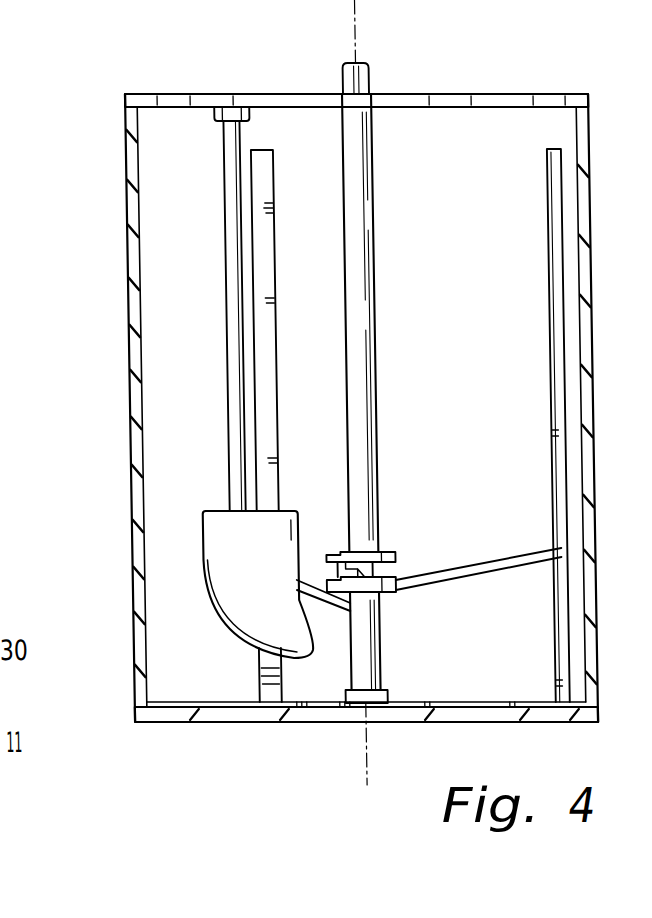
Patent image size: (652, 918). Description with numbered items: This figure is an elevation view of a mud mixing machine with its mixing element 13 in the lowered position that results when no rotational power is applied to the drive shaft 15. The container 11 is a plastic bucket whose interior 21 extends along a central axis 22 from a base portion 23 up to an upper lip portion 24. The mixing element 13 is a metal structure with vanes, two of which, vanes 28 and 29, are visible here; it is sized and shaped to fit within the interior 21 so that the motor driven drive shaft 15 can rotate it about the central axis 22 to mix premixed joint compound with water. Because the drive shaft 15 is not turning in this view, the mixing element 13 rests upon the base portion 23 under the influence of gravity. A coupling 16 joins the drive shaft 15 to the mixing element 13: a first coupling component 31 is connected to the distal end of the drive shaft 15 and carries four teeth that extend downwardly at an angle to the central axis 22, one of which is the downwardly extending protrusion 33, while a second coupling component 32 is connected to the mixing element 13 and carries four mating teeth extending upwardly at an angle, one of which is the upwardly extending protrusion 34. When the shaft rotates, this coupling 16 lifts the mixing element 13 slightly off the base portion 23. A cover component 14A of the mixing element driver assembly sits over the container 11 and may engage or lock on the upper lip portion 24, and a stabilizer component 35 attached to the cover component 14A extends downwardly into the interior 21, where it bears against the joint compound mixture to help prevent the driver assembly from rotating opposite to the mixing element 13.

The container 11 is at (124, 207).
The mixing element 13 is at (261, 147).
The cover component 14A is at (152, 96).
The motor driven drive shaft 15 is at (370, 78).
The coupling 16 is at (388, 555).
The interior 21 is at (495, 160).
The central axis 22 is at (358, 732).
The base portion 23 is at (217, 702).
The upper lip portion 24 is at (125, 127).
The vane 28 is at (259, 280).
The vane 29 is at (557, 310).
The first coupling component 31 is at (390, 558).
The second coupling component 32 is at (390, 587).
The downwardly extending protrusion 33 is at (289, 582).
The upwardly extending protrusion 34 is at (349, 580).
The stabilizer component 35 is at (206, 542).